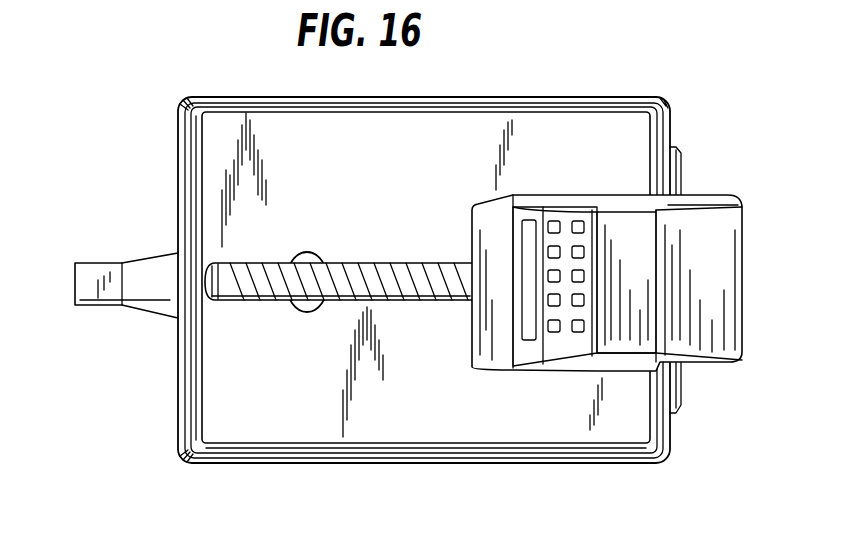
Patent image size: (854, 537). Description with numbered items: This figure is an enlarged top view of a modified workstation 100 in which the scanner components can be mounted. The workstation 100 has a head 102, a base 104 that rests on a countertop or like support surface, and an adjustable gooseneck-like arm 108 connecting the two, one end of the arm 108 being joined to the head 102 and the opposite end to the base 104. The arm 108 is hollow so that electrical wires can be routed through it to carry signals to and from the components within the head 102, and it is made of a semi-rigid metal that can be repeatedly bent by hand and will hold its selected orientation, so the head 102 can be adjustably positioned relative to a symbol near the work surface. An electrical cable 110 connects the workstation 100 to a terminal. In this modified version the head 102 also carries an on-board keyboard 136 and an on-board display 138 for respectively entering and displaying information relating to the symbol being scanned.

The workstation 100 is at (150, 464).
The head 102 is at (745, 179).
The base 104 is at (612, 122).
The arm 108 is at (433, 301).
The electrical cable 110 is at (97, 276).
The on-board keyboard 136 is at (556, 220).
The on-board display 138 is at (528, 334).